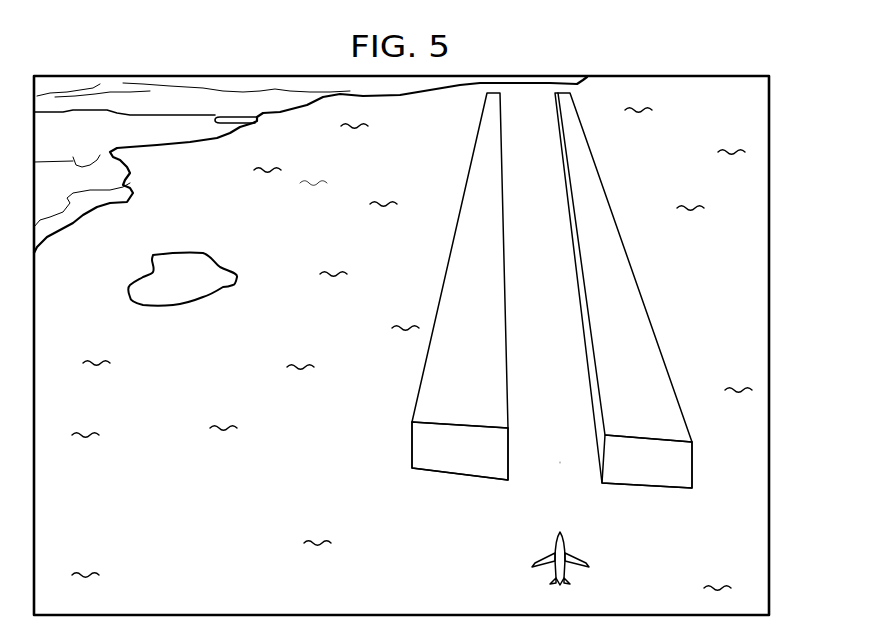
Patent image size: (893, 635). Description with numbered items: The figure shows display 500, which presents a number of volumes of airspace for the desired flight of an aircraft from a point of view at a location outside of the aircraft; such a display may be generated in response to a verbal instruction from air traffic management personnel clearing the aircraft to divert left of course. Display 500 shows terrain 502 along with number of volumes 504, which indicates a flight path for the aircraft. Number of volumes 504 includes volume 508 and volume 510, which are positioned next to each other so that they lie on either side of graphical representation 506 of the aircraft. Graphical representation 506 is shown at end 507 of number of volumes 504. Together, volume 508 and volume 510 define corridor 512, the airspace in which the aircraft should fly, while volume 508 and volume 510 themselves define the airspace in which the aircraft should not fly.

The display 500 is at (613, 76).
The terrain 502 is at (193, 505).
The number of volumes 504 is at (423, 323).
The graphical representation of the aircraft 506 is at (570, 570).
The end of number of volumes 507 is at (672, 473).
The volume 508 is at (427, 447).
The volume 510 is at (659, 290).
The corridor 512 is at (560, 462).